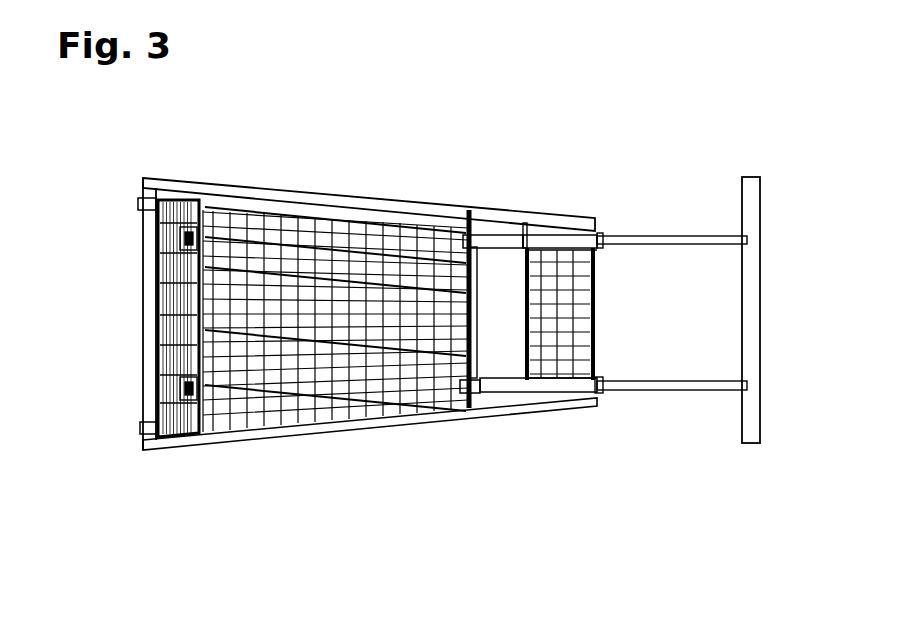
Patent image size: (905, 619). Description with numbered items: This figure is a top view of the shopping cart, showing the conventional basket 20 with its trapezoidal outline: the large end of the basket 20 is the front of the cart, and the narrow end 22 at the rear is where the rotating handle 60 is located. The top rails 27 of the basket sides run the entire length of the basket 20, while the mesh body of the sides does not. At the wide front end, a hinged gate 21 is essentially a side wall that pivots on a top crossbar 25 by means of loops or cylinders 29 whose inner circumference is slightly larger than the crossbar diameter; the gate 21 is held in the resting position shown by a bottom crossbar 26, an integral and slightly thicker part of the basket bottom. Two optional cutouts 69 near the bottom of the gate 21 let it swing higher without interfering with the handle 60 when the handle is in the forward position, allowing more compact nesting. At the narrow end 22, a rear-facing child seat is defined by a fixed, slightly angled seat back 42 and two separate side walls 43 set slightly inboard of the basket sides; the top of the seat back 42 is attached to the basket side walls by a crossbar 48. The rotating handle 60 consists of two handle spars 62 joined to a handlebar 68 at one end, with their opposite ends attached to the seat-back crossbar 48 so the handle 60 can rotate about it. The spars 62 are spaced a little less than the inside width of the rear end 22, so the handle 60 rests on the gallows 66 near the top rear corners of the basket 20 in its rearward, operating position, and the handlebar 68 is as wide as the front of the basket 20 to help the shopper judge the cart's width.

The basket 20 is at (412, 339).
The hinged gate 21 is at (263, 367).
The narrow end 22 is at (613, 345).
The top crossbar 25 is at (147, 253).
The bottom crossbar 26 is at (198, 390).
The top rails 27 is at (227, 190).
The loops or cylinders 29 is at (140, 203).
The seat back 42 is at (495, 295).
The side walls 43 is at (543, 247).
The crossbar 48 is at (476, 268).
The rotating handle 60 is at (613, 377).
The handle spars 62 is at (670, 393).
The gallows 66 is at (603, 397).
The handlebar 68 is at (745, 408).
The cutouts 69 is at (497, 395).